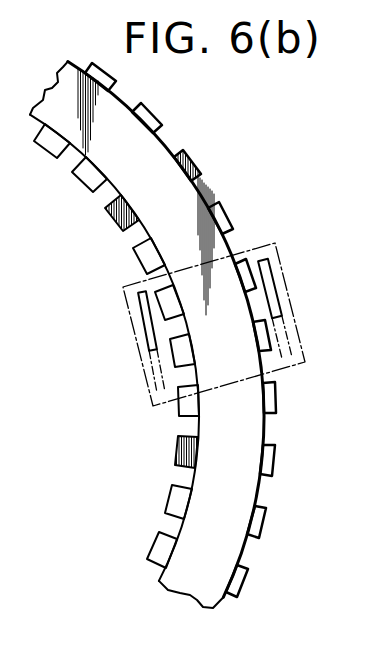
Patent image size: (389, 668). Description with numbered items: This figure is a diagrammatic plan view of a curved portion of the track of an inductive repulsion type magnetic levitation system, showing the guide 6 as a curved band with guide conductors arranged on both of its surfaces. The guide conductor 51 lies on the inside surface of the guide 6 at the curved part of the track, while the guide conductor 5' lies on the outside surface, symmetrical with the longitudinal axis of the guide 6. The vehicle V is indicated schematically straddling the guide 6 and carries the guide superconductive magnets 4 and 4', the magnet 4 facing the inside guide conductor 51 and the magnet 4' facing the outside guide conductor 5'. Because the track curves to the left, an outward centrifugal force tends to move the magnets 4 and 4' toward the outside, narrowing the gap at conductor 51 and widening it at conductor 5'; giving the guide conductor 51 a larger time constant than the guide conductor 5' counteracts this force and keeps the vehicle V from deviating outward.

The guide 6 is at (60, 88).
The guide conductor 51 is at (90, 183).
The guide conductor 5' is at (180, 330).
The vehicle V is at (276, 243).
The guide superconductive magnet 4 is at (133, 340).
The guide superconductive magnet 4' is at (288, 308).